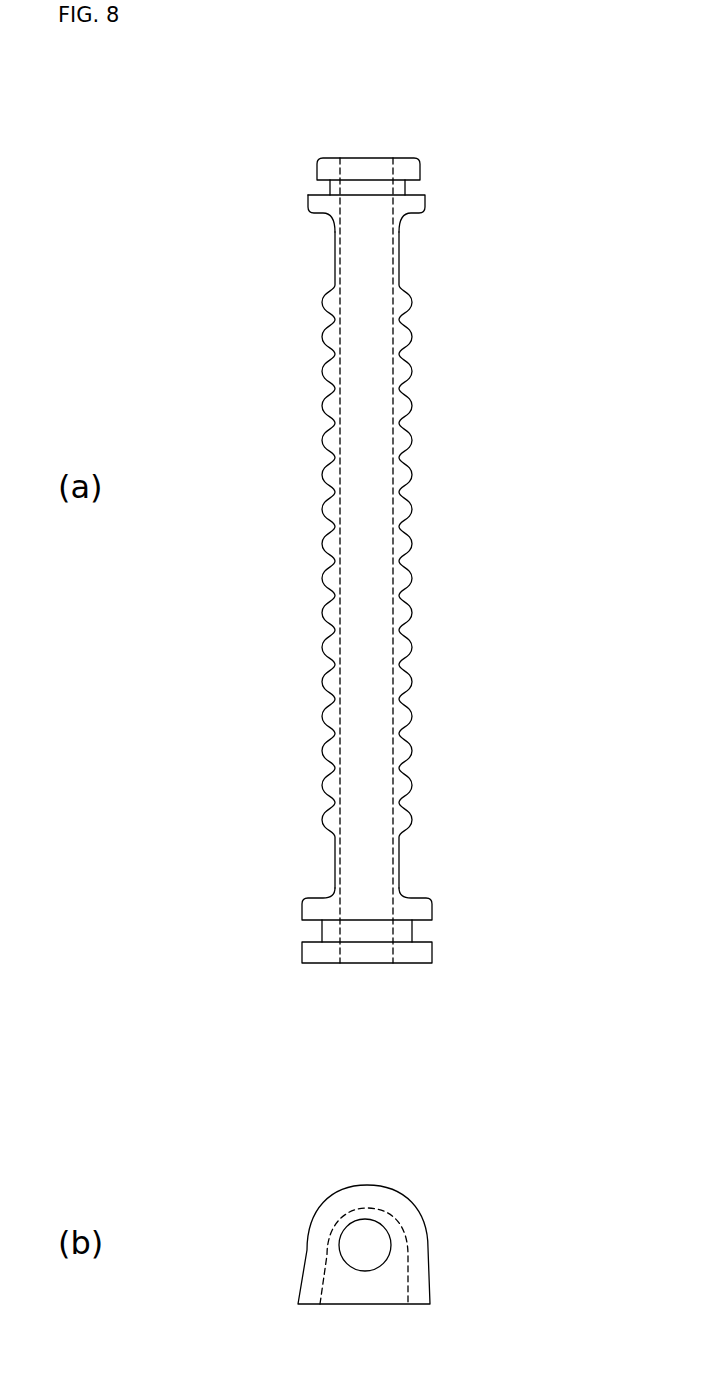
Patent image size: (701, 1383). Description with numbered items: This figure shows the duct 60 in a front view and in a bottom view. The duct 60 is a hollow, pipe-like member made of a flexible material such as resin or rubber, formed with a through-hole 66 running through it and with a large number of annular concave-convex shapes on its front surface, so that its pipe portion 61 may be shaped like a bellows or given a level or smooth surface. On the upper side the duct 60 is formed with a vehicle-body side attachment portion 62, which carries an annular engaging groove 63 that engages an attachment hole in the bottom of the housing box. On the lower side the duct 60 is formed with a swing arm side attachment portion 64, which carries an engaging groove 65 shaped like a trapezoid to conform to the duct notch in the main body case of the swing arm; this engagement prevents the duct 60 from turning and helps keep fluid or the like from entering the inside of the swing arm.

The duct 60 is at (502, 330).
The bellows portion 61 is at (402, 298).
The vehicle-body side attachment portion 62 is at (462, 148).
The annular engaging groove 63 is at (417, 188).
The swing arm side attachment portion 64 is at (445, 952).
The engaging groove 65 is at (425, 932).
The through-hole 66 is at (345, 222).